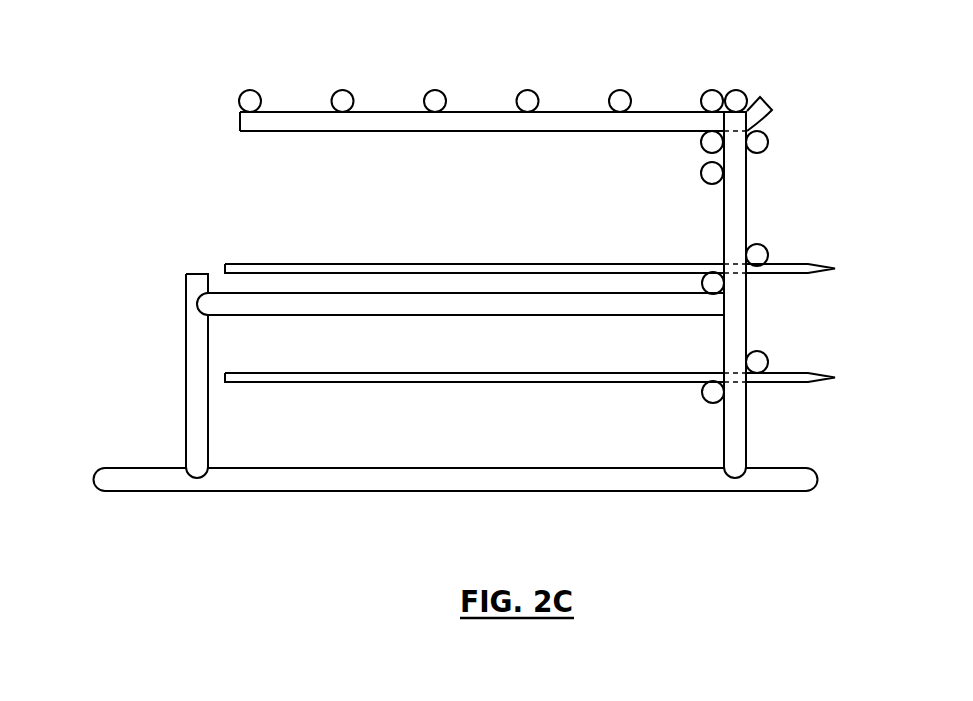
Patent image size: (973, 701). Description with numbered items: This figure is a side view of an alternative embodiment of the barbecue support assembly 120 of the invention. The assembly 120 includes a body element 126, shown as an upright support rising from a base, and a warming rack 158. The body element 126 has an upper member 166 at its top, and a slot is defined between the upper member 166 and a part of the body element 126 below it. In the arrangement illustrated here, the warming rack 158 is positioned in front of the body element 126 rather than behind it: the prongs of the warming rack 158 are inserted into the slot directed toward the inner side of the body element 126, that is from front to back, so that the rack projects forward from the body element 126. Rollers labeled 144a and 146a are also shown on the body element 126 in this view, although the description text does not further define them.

The barbecue support assembly 120 is at (516, 266).
The body element 126 is at (778, 211).
The warming rack 158 is at (336, 70).
The upper member 166 is at (738, 97).
The roller 144a is at (768, 142).
The roller 146a is at (707, 177).